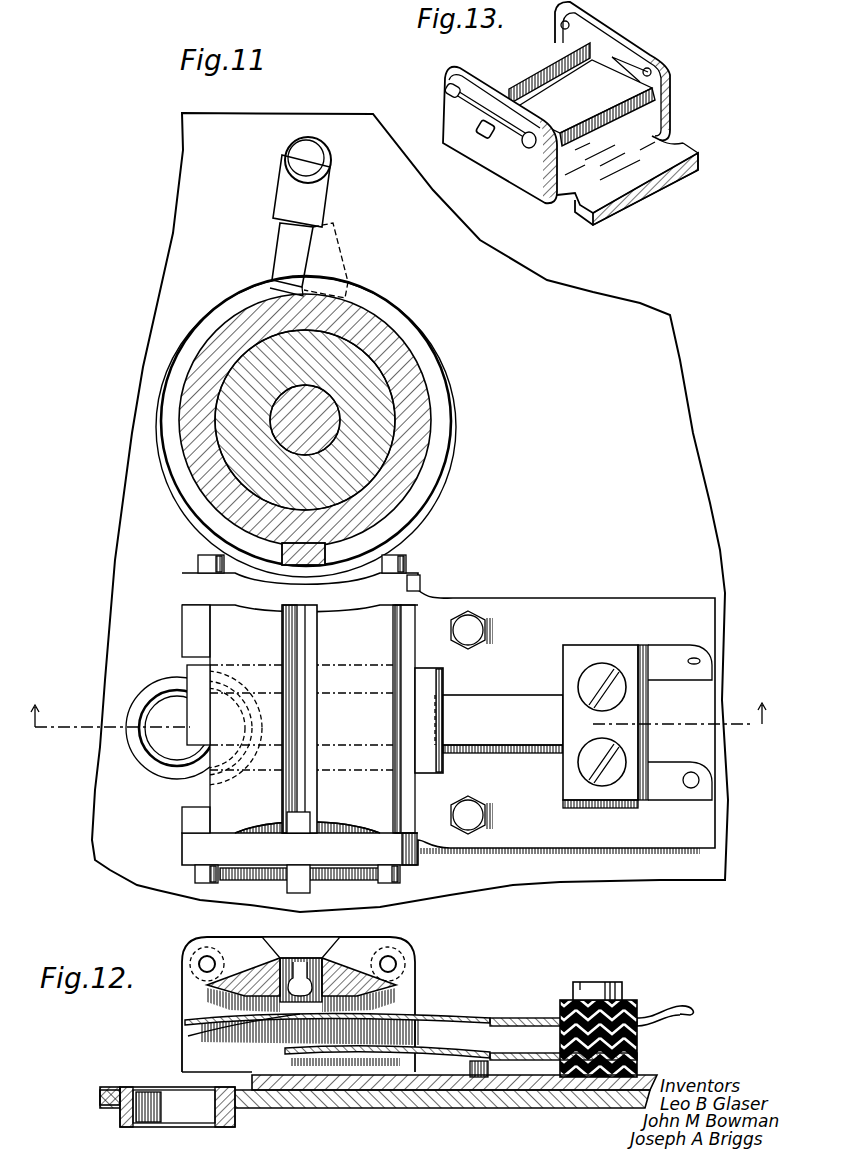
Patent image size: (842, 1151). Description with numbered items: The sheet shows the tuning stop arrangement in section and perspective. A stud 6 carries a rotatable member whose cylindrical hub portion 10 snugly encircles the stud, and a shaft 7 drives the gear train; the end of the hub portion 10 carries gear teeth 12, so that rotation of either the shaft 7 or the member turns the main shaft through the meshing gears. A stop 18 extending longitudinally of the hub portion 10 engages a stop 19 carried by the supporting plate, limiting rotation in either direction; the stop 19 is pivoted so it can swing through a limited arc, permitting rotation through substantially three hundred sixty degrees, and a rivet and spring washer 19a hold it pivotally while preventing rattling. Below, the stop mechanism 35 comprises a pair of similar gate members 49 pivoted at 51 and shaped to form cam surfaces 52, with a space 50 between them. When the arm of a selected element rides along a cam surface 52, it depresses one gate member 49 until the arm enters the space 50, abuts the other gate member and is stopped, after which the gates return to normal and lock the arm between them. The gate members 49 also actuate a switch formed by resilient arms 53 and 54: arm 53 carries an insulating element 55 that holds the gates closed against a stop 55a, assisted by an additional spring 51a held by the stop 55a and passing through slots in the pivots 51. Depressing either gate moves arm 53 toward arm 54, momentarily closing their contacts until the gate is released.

In FIG. 11, the stud 6 is at (353, 360).
In FIG. 11, the shaft 7 is at (322, 403).
In FIG. 11, the cylindrical hub portion 10 is at (452, 425).
In FIG. 11, the gear teeth 12 is at (396, 727).
In FIG. 11, the stop 18 is at (327, 547).
In FIG. 11, the stop 19 is at (273, 252).
In FIG. 11, the rivet and spring washer 19a is at (286, 168).
In FIG. 11, the stop mechanism 35 is at (420, 584).
In FIG. 12, the stop mechanism 35 is at (408, 952).
In FIG. 13, the stop mechanism 35 is at (671, 108).
In FIG. 11, the gate members 49 is at (218, 632).
In FIG. 12, the gate members 49 is at (340, 952).
In FIG. 13, the gate members 49 is at (552, 61).
In FIG. 11, the space 50 is at (293, 790).
In FIG. 12, the space 50 is at (300, 968).
In FIG. 13, the space 50 is at (600, 120).
In FIG. 11, the pivots 51 is at (200, 560).
In FIG. 12, the pivots 51 is at (199, 958).
In FIG. 11, the spring 51a is at (246, 878).
In FIG. 13, the spring 51a is at (480, 135).
In FIG. 11, the cam surfaces 52 is at (297, 649).
In FIG. 12, the cam surfaces 52 is at (240, 975).
In FIG. 13, the cam surfaces 52 is at (526, 69).
In FIG. 11, the resilient arm 53 is at (520, 695).
In FIG. 12, the resilient arm 53 is at (500, 1018).
In FIG. 12, the resilient arm 54 is at (503, 1054).
In FIG. 11, the insulating element 55 is at (425, 675).
In FIG. 12, the insulating element 55 is at (400, 1010).
In FIG. 11, the stop 55a is at (312, 887).
In FIG. 13, the stop 55a is at (482, 140).